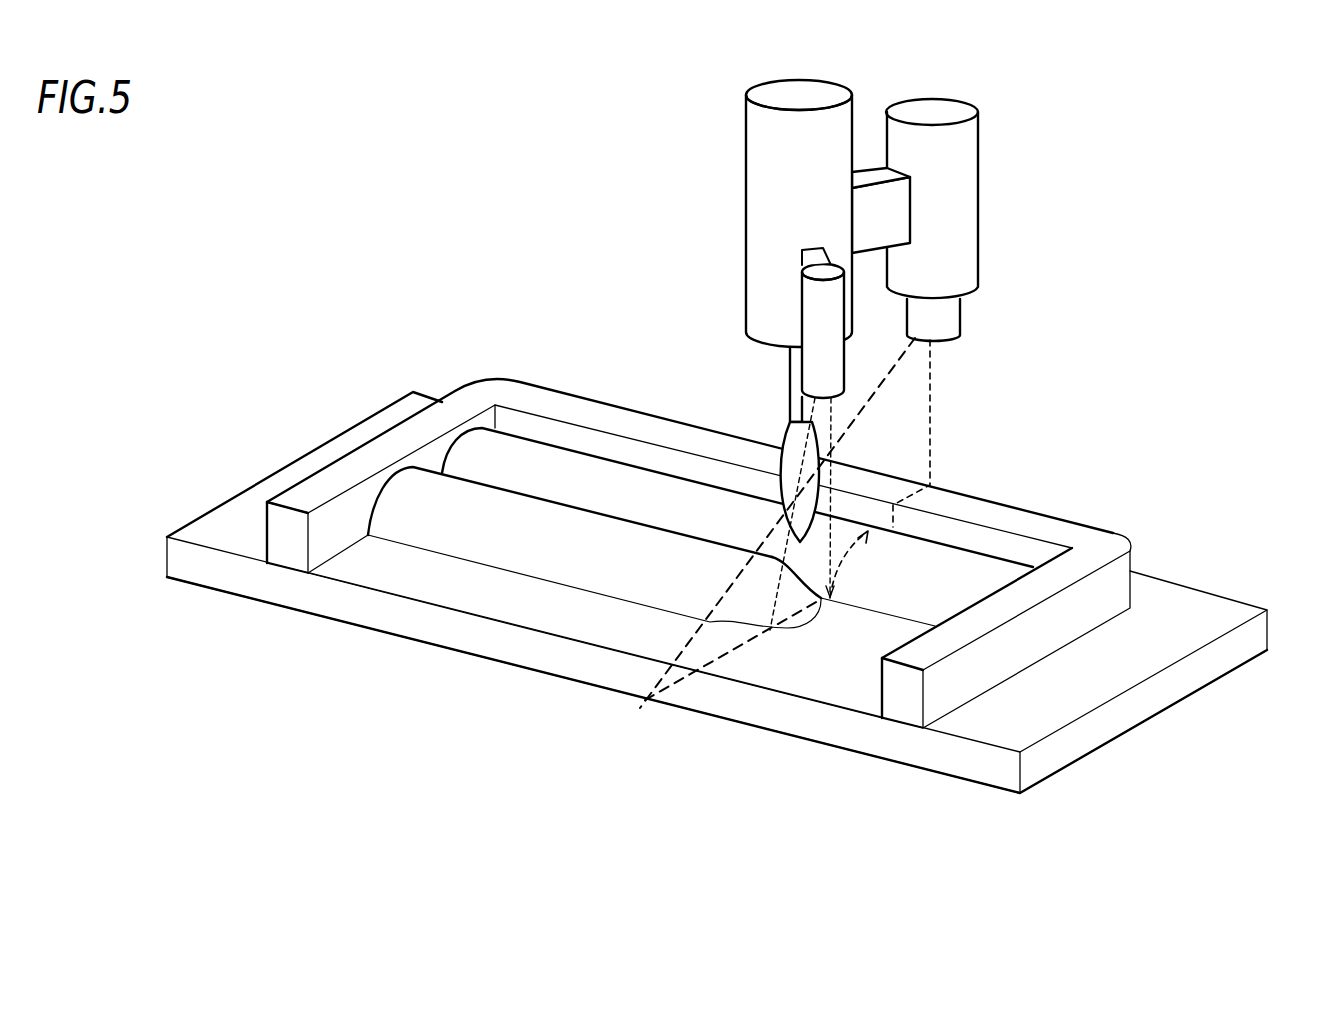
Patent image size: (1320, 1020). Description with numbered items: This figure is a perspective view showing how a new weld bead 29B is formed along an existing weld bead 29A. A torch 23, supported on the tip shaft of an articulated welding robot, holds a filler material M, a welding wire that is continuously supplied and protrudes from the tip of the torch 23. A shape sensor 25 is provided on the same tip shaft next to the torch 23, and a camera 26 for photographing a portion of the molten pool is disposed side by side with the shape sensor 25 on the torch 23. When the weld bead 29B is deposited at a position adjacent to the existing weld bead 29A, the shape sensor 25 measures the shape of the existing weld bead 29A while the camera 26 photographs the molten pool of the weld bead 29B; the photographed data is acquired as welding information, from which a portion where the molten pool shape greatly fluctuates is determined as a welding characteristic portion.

The torch 23 is at (746, 156).
The shape sensor 25 is at (978, 177).
The camera 26 is at (810, 308).
The filler material M is at (790, 388).
The existing weld bead 29A is at (570, 462).
The weld bead 29B is at (477, 500).